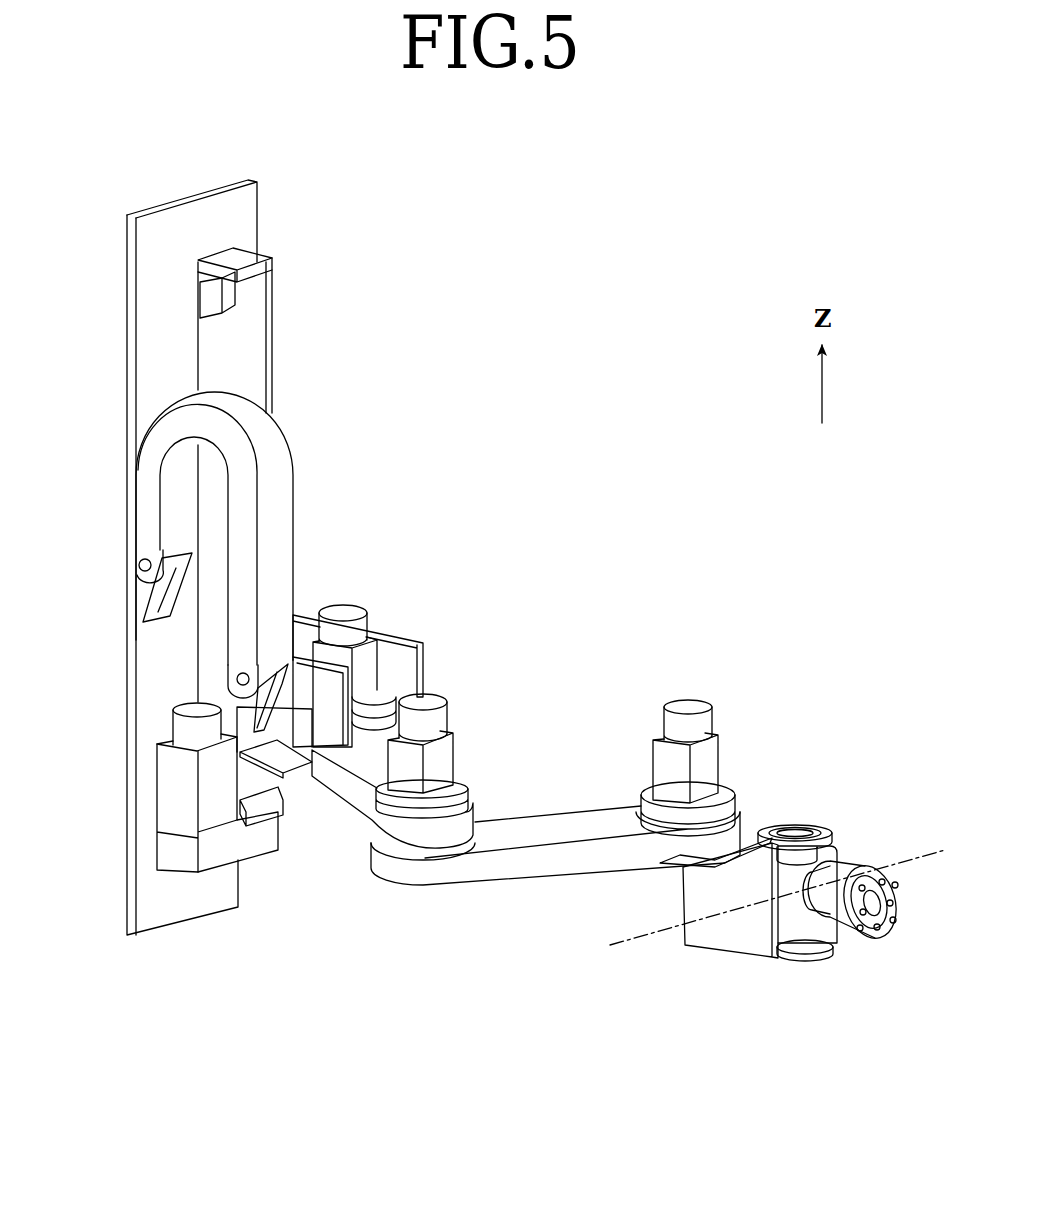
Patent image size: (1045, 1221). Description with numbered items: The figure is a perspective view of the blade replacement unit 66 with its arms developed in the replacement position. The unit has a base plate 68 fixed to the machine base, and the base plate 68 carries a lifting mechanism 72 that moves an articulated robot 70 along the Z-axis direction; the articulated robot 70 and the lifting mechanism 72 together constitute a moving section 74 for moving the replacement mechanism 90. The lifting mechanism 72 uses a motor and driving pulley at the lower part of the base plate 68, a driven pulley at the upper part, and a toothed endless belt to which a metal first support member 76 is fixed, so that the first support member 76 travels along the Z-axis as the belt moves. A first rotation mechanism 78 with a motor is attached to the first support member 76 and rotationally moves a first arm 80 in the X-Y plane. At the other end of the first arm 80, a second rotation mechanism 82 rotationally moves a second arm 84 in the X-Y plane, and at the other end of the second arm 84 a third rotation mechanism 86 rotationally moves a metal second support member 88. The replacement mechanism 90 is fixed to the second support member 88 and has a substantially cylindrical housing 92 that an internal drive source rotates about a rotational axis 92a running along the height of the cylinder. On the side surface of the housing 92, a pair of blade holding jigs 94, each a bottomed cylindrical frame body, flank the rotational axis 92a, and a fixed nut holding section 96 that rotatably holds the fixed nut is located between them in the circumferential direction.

The blade replacement unit 66 is at (678, 311).
The base plate 68 is at (181, 908).
The articulated robot 70 is at (409, 897).
The lifting mechanism 72 is at (190, 643).
The moving section 74 is at (79, 693).
The first support member 76 is at (427, 658).
The first rotation mechanism 78 is at (363, 601).
The first arm 80 is at (340, 805).
The second rotation mechanism 82 is at (459, 751).
The second arm 84 is at (512, 866).
The third rotation mechanism 86 is at (704, 696).
The second support member 88 is at (723, 940).
The replacement mechanism 90 is at (827, 786).
The housing 92 is at (788, 918).
The rotational axis 92a is at (899, 862).
The blade holding jig 94 is at (792, 822).
The fixed nut holding section 96 is at (878, 947).